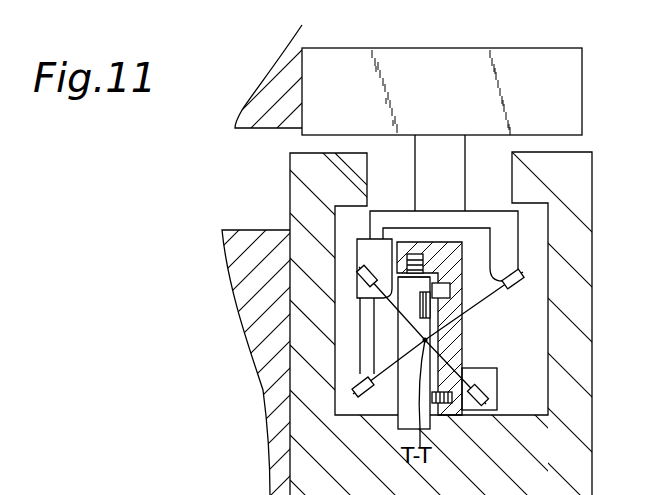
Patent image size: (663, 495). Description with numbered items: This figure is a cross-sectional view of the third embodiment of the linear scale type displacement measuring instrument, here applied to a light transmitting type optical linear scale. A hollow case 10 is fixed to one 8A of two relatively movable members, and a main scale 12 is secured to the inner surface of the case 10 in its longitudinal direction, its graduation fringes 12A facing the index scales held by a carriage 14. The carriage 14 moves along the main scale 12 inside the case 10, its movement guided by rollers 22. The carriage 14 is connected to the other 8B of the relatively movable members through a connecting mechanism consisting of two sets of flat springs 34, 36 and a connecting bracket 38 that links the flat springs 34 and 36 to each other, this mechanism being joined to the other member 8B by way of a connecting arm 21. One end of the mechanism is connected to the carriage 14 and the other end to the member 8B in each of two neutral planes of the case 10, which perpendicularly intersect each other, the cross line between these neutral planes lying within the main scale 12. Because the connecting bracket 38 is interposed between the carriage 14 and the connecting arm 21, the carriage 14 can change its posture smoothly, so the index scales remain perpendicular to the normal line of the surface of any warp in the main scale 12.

The one of relatively movable members 8A is at (250, 230).
The other of relatively movable members 8B is at (304, 44).
The case 10 is at (592, 462).
The main scale 12 is at (398, 343).
The graduation fringes 12A is at (424, 303).
The carriage 14 is at (455, 344).
The connecting arm 21 is at (449, 155).
The rollers 22 is at (414, 254).
The flat springs 34 is at (370, 388).
The flat springs 36 is at (364, 272).
The connecting bracket 38 is at (495, 211).